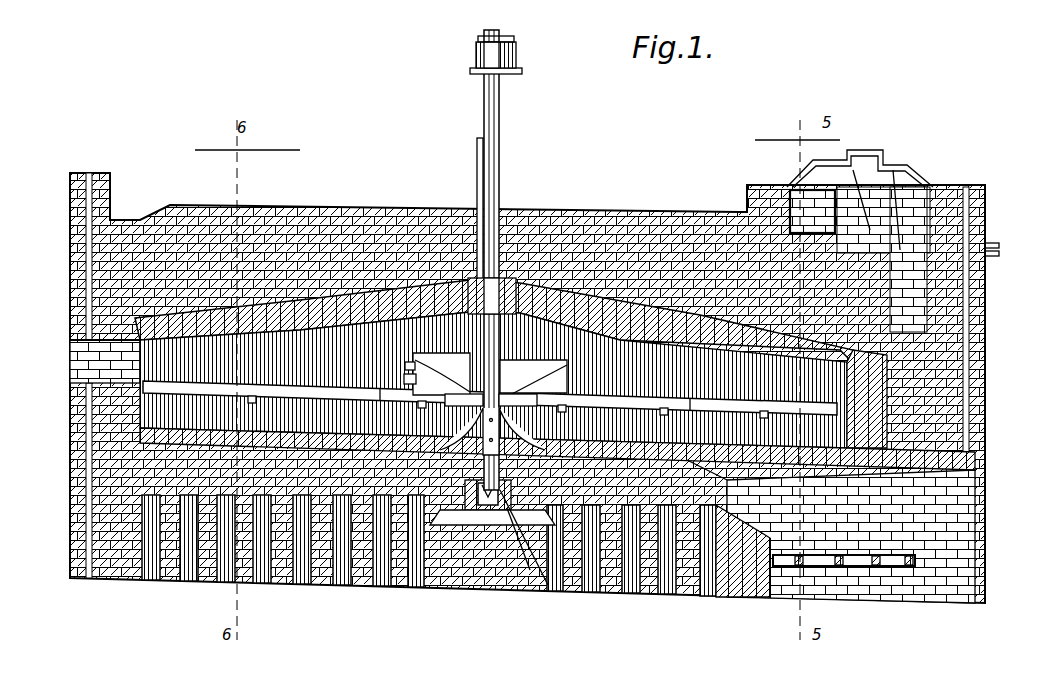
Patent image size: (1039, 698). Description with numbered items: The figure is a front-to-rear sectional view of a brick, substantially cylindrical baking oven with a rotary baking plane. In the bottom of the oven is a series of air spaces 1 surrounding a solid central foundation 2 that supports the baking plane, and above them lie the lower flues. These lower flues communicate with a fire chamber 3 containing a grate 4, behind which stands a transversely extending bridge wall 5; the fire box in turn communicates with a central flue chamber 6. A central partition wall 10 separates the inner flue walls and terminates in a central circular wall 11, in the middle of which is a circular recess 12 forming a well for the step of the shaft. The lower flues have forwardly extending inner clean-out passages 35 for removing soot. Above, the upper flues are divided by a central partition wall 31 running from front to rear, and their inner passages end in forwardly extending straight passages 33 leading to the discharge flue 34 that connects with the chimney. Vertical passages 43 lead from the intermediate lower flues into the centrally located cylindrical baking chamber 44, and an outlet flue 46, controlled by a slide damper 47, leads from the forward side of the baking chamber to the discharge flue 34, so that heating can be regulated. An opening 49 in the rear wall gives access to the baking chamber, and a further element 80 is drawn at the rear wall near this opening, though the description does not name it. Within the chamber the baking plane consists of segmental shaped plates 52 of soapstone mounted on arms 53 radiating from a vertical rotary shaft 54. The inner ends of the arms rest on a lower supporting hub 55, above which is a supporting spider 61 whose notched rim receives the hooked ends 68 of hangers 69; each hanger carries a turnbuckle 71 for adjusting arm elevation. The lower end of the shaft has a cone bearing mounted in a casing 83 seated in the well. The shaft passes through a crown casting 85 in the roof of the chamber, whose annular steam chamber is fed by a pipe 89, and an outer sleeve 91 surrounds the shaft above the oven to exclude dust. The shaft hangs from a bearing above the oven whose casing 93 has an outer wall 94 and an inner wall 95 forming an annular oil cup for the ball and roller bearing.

The air spaces 1 is at (706, 596).
The central foundation 2 is at (472, 520).
The fire chamber 3 is at (935, 537).
The grate 4 is at (885, 562).
The bridge wall 5 is at (758, 599).
The central flue chamber 6 is at (722, 598).
The central partition wall 10 is at (345, 572).
The central circular wall 11 is at (548, 588).
The circular recess 12 is at (508, 510).
The central partition wall 31 is at (322, 268).
The forwardly extending straight passages 33 is at (672, 406).
The discharge flue 34 is at (800, 192).
The inner clean-out passages 35 is at (998, 251).
The vertical passages 43 is at (491, 405).
The baking chamber 44 is at (70, 447).
The outlet flue 46 is at (905, 398).
The slide damper 47 is at (903, 248).
The opening 49 is at (70, 378).
The segmental shaped plates 52 is at (490, 399).
The arms 53 is at (372, 395).
The rotary shaft 54 is at (509, 260).
The lower supporting hub 55 is at (492, 431).
The supporting spider 61 is at (533, 377).
The hooked ends 68 is at (441, 366).
The hangers 69 is at (405, 364).
The turnbuckles 71 is at (404, 378).
The port 80 is at (72, 345).
The casing 83 is at (468, 505).
The crown casting 85 is at (472, 278).
The pipe 89 is at (477, 160).
The outer sleeve 91 is at (499, 168).
The casing 93 is at (520, 70).
The outer wall 94 is at (516, 54).
The inner wall 95 is at (510, 38).